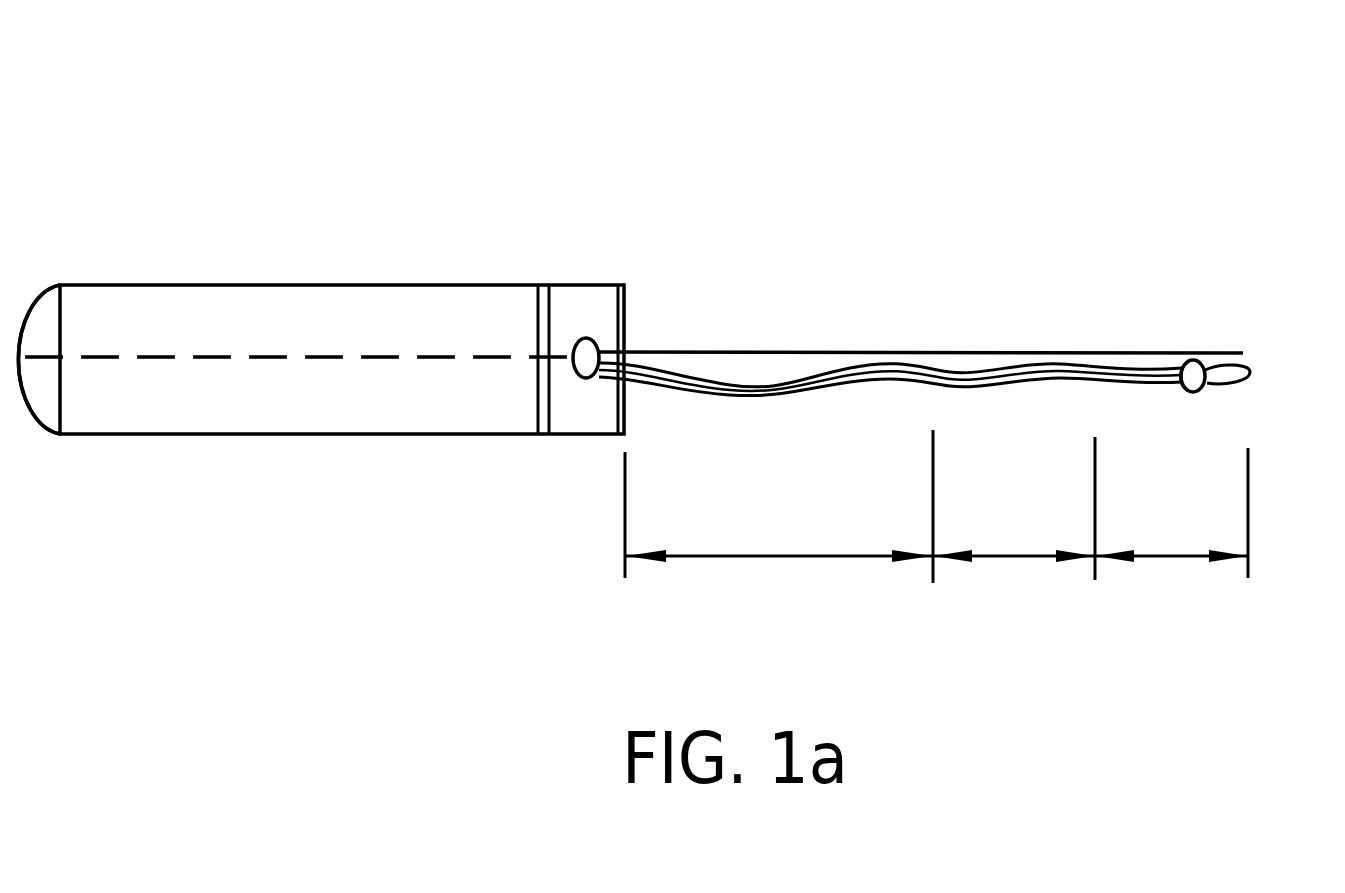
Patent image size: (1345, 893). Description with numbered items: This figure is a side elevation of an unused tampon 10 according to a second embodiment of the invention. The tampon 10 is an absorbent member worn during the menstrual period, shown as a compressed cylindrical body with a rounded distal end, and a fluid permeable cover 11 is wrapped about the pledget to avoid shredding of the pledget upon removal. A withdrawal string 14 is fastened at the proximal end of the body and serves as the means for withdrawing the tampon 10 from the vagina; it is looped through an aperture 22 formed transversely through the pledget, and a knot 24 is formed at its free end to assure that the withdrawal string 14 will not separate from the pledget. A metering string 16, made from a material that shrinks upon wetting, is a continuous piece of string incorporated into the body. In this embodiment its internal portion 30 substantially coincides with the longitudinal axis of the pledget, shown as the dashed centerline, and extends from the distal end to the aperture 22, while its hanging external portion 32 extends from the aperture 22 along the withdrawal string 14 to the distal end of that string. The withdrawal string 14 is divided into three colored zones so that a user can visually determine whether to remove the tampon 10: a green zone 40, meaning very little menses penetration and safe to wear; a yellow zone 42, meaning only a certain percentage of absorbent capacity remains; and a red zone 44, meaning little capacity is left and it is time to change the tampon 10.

The tampon 10 is at (305, 215).
The fluid permeable cover 11 is at (102, 322).
The withdrawal string 14 is at (958, 388).
The metering string 16 is at (283, 358).
The aperture 22 is at (597, 373).
The knot 24 is at (1205, 392).
The internal portion 30 is at (158, 415).
The external portion 32 is at (756, 295).
The green zone 40 is at (1165, 553).
The yellow zone 42 is at (1003, 553).
The red zone 44 is at (771, 553).